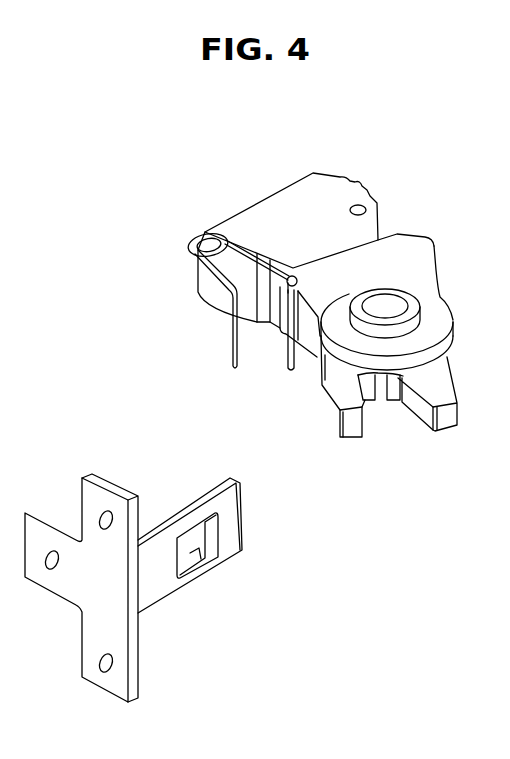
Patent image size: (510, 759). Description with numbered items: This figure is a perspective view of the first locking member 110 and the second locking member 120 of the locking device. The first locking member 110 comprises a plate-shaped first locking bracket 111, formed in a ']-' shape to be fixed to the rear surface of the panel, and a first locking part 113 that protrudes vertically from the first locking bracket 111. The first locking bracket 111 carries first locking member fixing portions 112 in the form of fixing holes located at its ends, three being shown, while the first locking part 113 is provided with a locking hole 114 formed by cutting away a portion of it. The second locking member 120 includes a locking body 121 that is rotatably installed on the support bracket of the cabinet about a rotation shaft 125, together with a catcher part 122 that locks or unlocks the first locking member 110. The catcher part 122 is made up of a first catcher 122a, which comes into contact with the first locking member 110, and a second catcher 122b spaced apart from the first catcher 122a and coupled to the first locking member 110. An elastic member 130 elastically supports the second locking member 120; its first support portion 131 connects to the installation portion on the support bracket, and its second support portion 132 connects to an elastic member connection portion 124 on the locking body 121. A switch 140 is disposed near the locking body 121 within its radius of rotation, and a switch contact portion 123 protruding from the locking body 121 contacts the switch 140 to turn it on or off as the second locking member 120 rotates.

The first locking member 110 is at (161, 553).
The first locking bracket 111 is at (90, 523).
The first locking member fixing portion 112 is at (100, 668).
The first locking part 113 is at (232, 536).
The locking hole 114 is at (196, 555).
The second locking member 120 is at (395, 348).
The locking body 121 is at (398, 273).
The catcher part 122 is at (395, 434).
The first catcher 122a is at (433, 427).
The second catcher 122b is at (350, 433).
The switch contact portion 123 is at (403, 238).
The elastic member connection portion 124 is at (296, 272).
The rotation shaft 125 is at (394, 303).
The elastic member 130 is at (239, 277).
The first support portion 131 is at (231, 353).
The second support portion 132 is at (291, 360).
The switch 140 is at (283, 203).